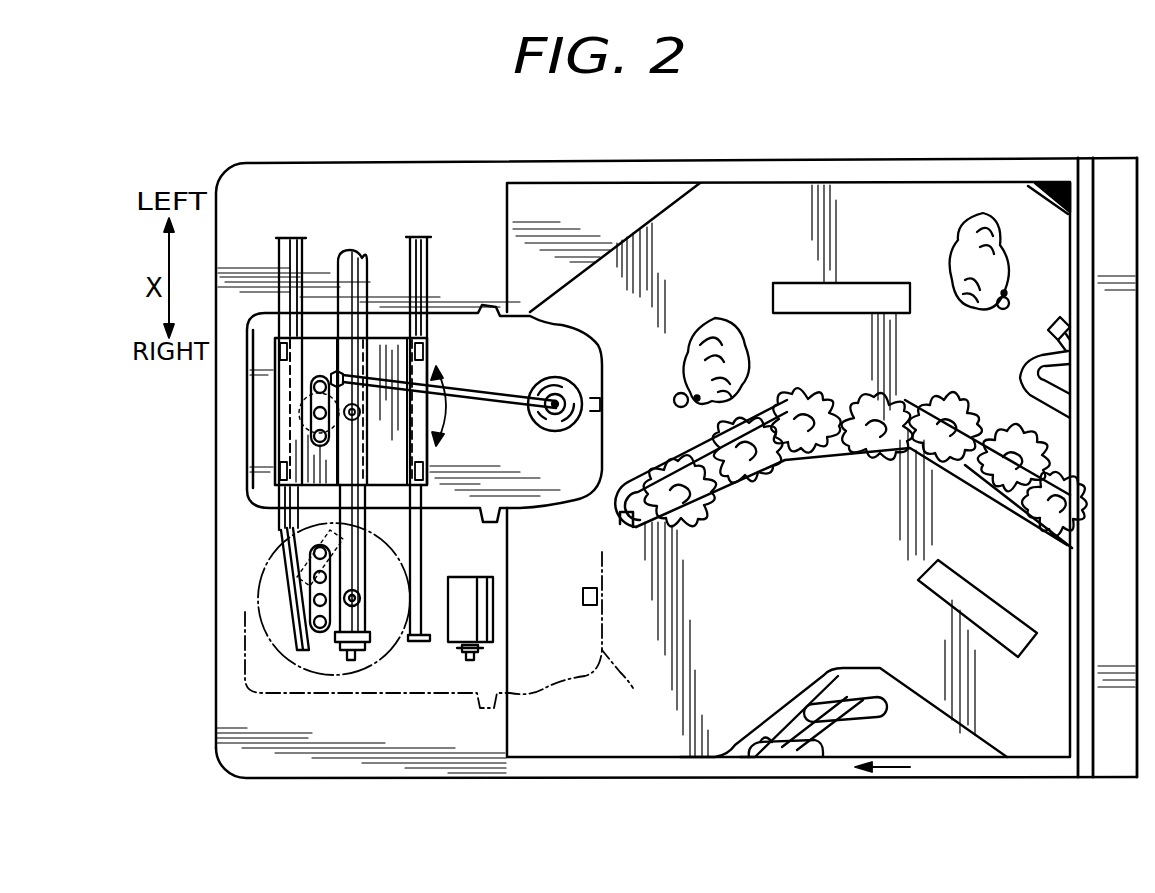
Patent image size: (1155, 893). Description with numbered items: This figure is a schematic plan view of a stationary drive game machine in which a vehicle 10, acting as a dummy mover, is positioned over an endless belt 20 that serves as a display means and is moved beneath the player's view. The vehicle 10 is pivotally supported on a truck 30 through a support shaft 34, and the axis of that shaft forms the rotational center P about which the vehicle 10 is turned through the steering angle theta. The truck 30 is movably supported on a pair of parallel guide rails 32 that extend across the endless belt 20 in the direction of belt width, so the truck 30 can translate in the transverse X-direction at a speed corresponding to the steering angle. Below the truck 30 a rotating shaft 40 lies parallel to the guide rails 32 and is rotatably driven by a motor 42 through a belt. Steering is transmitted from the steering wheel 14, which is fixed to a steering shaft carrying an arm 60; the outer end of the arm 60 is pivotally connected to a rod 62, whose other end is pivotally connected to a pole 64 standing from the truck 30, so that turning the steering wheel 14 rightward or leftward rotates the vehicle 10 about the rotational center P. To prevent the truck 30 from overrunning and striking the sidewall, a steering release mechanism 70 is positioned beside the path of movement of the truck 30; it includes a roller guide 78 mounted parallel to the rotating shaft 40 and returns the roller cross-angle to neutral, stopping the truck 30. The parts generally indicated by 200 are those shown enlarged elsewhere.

The vehicle 10 is at (548, 510).
The steering wheel 14 is at (563, 382).
The endless belt 20 is at (684, 758).
The truck 30 is at (262, 508).
The guide rails 32 is at (283, 267).
The support shaft 34 is at (307, 412).
The rotating shaft 40 is at (372, 267).
The motor 42 is at (480, 590).
The arm 60 is at (558, 414).
The rod 62 is at (470, 400).
The pole 64 is at (330, 377).
The steering release mechanism 70 is at (325, 665).
The roller guide 78 is at (305, 565).
The parts of the steering release mechanism 200 is at (277, 650).
The rotational center P is at (314, 395).